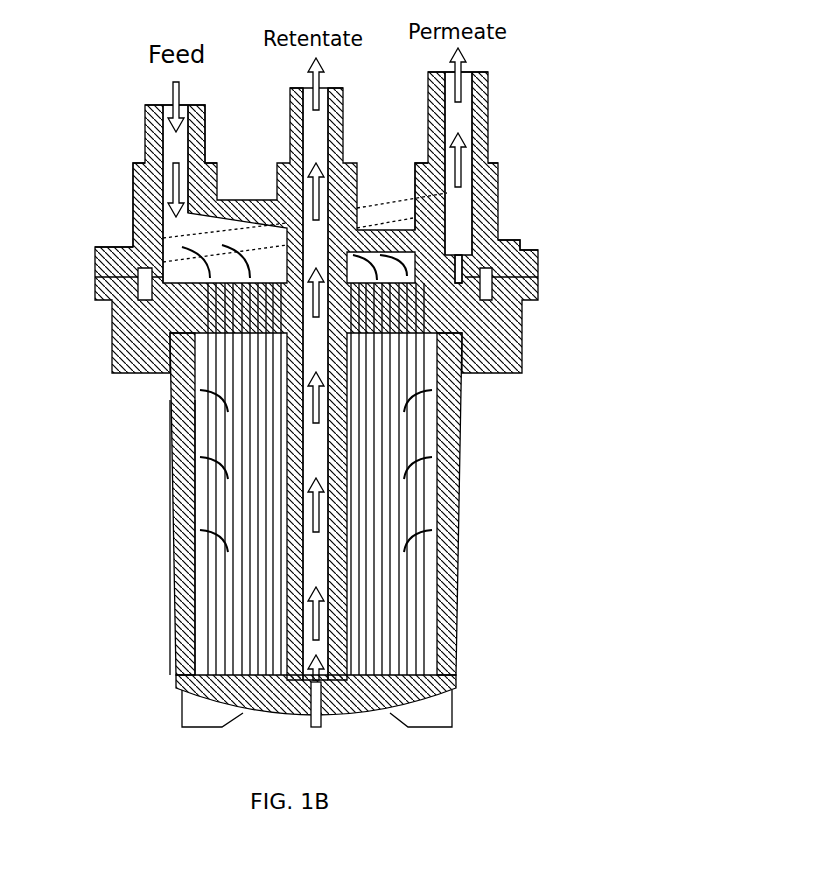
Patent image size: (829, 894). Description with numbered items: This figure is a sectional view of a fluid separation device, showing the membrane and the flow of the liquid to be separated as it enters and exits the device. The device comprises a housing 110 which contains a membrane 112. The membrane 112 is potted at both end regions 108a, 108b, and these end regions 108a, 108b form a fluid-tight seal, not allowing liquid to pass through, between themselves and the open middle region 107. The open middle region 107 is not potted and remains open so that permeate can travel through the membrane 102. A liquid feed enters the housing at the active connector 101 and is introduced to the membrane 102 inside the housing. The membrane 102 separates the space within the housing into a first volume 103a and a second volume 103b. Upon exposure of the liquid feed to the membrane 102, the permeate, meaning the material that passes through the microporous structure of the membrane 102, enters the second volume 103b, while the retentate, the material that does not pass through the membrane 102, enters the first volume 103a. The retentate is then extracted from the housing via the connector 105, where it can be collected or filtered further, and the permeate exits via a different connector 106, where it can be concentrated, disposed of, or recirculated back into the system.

The active connector 101 is at (148, 103).
The membrane 102 is at (193, 422).
The first volume 103a is at (293, 713).
The second volume 103b is at (173, 482).
The connector 105 is at (343, 90).
The connector 106 is at (488, 73).
The open middle region 107 is at (455, 278).
The end region 108a is at (415, 152).
The end region 108b is at (362, 722).
The housing 110 is at (517, 132).
The membrane 112 is at (415, 507).